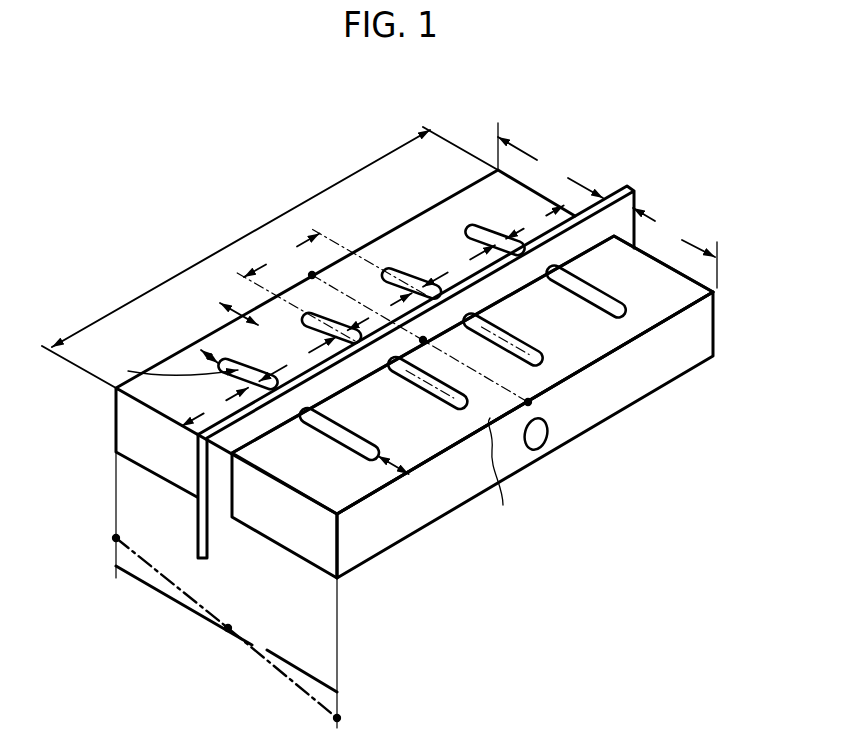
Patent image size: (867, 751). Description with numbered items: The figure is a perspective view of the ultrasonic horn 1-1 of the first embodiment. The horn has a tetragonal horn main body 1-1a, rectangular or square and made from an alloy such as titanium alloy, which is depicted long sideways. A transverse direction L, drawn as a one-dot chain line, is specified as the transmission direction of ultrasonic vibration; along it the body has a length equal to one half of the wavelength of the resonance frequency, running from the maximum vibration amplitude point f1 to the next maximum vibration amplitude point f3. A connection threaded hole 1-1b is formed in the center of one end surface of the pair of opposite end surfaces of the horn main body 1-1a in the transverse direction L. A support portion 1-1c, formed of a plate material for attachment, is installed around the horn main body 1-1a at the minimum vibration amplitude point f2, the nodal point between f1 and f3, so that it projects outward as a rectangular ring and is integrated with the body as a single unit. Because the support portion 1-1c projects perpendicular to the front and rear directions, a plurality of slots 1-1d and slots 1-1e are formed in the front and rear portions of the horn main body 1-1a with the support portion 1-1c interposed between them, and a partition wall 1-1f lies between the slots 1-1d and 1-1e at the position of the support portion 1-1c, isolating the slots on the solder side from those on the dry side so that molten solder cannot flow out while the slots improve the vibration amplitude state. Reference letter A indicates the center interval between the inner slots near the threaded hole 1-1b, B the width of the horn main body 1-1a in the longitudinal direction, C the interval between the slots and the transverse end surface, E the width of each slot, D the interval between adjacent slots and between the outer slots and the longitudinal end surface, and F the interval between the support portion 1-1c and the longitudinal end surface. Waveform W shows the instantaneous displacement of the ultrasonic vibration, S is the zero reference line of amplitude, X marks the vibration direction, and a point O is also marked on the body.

The ultrasonic horn 1-1 is at (147, 480).
The horn main body 1-1a is at (300, 547).
The connection threaded hole 1-1b is at (543, 440).
The support portion 1-1c is at (581, 236).
The slots 1-1d is at (480, 222).
The slots 1-1e is at (625, 302).
The partition wall 1-1f is at (320, 423).
The center interval A is at (282, 256).
The width of the horn main body B is at (270, 257).
The interval between slots and end surface C is at (200, 355).
The interval between adjacent slots D is at (373, 315).
The width of each slot E is at (173, 366).
The interval between support portion and end surface F is at (607, 205).
The vibration direction X is at (226, 310).
The reference line S is at (268, 649).
The waveform W is at (286, 686).
The transverse direction L is at (499, 475).
The origin point O is at (536, 434).
The maximum vibration amplitude point f1 is at (538, 401).
The minimum vibration amplitude point f2 is at (535, 400).
The maximum vibration amplitude point f3 is at (314, 275).